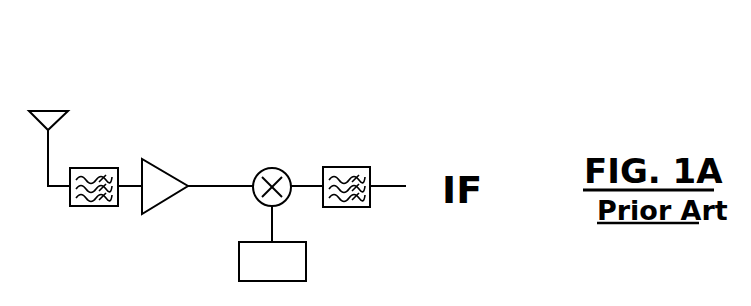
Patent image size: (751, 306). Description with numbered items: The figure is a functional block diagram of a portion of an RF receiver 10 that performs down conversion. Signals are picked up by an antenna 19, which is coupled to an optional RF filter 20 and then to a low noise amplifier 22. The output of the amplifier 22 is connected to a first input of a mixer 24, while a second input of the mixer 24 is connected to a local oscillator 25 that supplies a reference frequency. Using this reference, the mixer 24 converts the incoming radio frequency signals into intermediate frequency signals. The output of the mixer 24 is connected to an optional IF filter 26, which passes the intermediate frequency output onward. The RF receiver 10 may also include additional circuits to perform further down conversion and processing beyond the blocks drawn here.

The RF receiver 10 is at (214, 51).
The antenna 19 is at (60, 120).
The RF filter 20 is at (89, 207).
The low noise amplifier 22 is at (161, 166).
The mixer 24 is at (268, 166).
The local oscillator 25 is at (306, 258).
The IF filter 26 is at (344, 167).